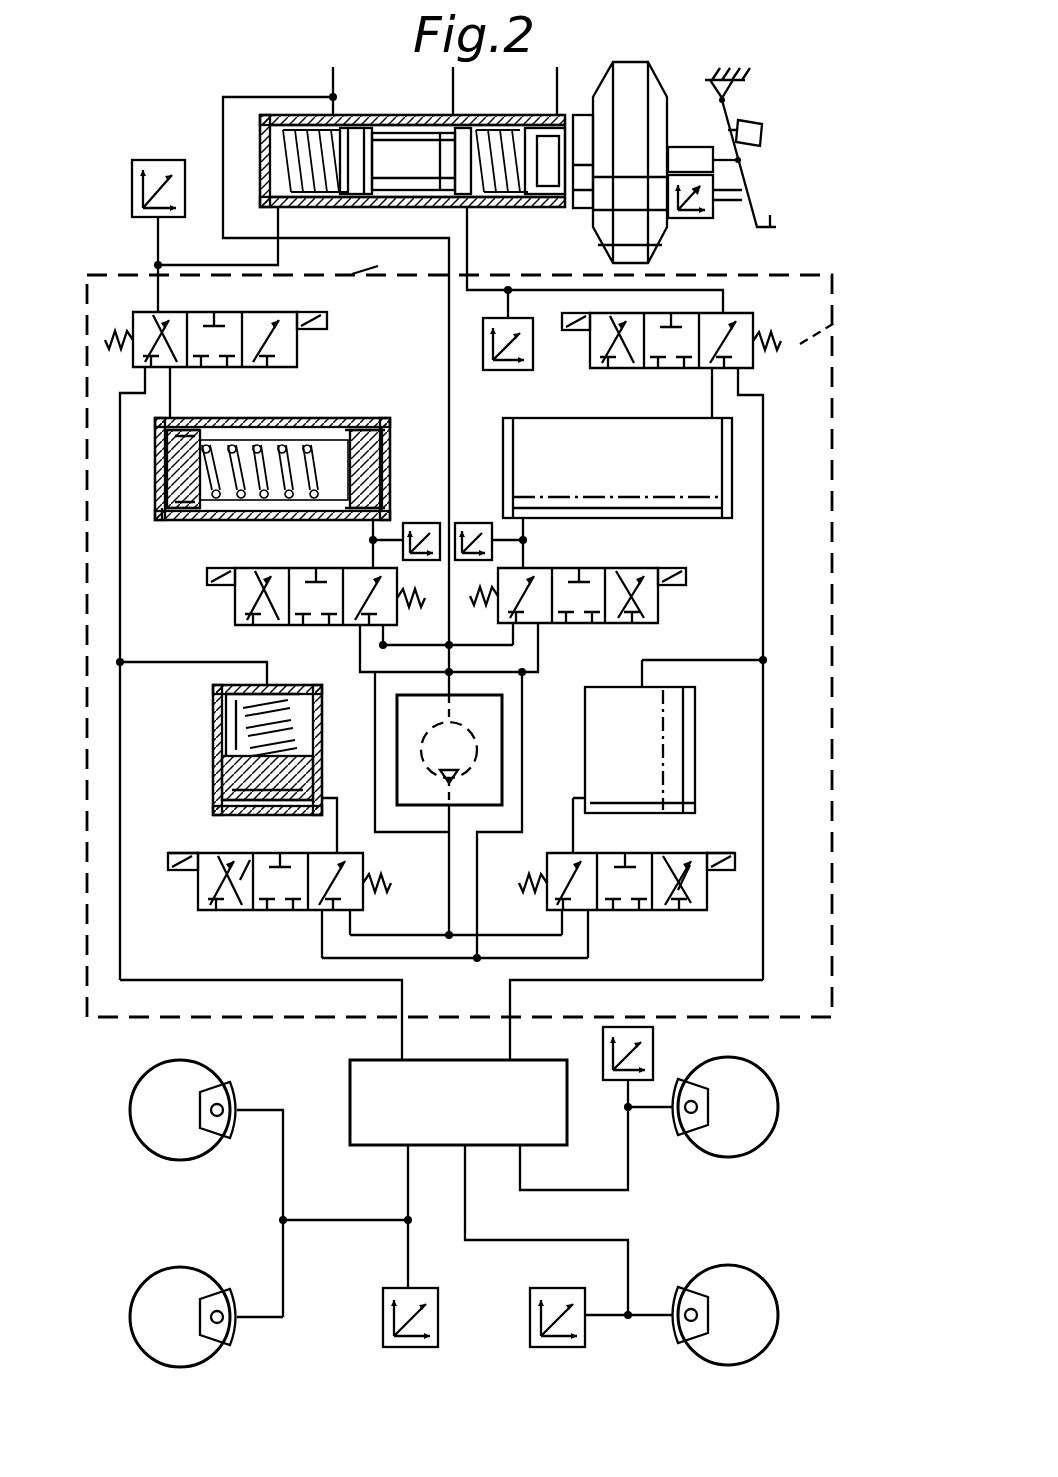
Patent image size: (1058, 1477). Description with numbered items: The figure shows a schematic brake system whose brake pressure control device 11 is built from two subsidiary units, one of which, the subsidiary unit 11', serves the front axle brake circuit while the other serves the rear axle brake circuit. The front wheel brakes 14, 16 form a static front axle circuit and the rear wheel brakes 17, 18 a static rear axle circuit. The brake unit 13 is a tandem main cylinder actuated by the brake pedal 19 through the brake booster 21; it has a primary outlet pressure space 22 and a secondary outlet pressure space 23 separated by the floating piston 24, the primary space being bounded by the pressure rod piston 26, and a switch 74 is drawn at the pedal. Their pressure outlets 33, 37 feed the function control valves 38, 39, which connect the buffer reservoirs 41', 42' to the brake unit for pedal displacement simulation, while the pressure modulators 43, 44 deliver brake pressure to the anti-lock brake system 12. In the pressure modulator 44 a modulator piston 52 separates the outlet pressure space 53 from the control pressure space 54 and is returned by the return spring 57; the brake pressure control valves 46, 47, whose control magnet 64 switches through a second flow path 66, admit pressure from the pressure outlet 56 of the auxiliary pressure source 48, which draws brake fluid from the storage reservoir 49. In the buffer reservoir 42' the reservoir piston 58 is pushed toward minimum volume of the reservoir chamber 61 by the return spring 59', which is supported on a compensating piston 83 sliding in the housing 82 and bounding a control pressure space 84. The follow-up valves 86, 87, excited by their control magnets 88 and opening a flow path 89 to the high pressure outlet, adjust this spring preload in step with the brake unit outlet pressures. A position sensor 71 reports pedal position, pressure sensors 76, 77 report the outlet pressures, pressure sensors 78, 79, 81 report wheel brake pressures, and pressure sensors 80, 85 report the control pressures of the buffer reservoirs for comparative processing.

The brake pressure control device 11 is at (488, 646).
The subsidiary unit 11' is at (840, 313).
The anti-lock brake system 12 is at (414, 1074).
The brake unit 13 is at (405, 121).
The front wheel brake 14 is at (721, 1107).
The front wheel brake 16 is at (706, 1303).
The rear wheel brake 17 is at (206, 1186).
The rear wheel brake 18 is at (206, 1303).
The brake pedal 19 is at (776, 228).
The brake booster 21 is at (664, 82).
The primary outlet pressure space 22 is at (498, 132).
The secondary outlet pressure space 23 is at (278, 160).
The floating piston 24 is at (370, 126).
The pressure rod piston 26 is at (560, 150).
The pressure outlet 33 is at (468, 210).
The pressure outlet 37 is at (290, 209).
The function control valve 38 is at (752, 350).
The function control valve 39 is at (145, 328).
The buffer reservoir 41' is at (605, 474).
The buffer reservoir 42' is at (280, 471).
The pressure modulator 43 is at (698, 745).
The pressure modulator 44 is at (240, 755).
The brake pressure control valve 46 is at (702, 903).
The brake pressure control valve 47 is at (198, 888).
The auxiliary pressure source 48 is at (510, 744).
The storage reservoir 49 is at (332, 94).
The modulator piston 52 is at (227, 787).
The outlet pressure space 53 is at (303, 722).
The control pressure space 54 is at (213, 808).
The pressure outlet 56 is at (448, 836).
The return spring 57 is at (300, 754).
The reservoir piston 58 is at (178, 482).
The return spring 59' is at (274, 432).
The reservoir chamber 61 is at (172, 523).
The control magnet 64 is at (174, 862).
The second flow path 66 is at (240, 880).
The position sensor 71 is at (690, 219).
The brake light switch 74 is at (762, 128).
The pressure sensor 76 is at (528, 348).
The pressure sensor 77 is at (156, 168).
The pressure sensor 78 is at (644, 1052).
The pressure sensor 79 is at (557, 1294).
The pressure sensor 80 is at (463, 562).
The pressure sensor 81 is at (403, 1294).
The housing 82 is at (204, 428).
The compensating piston 83 is at (390, 493).
The control pressure space 84 is at (374, 428).
The pressure sensor 85 is at (424, 562).
The follow-up valve 86 is at (643, 595).
The follow-up valve 87 is at (281, 600).
The control magnet 88 is at (186, 609).
The flow path 89 is at (351, 567).